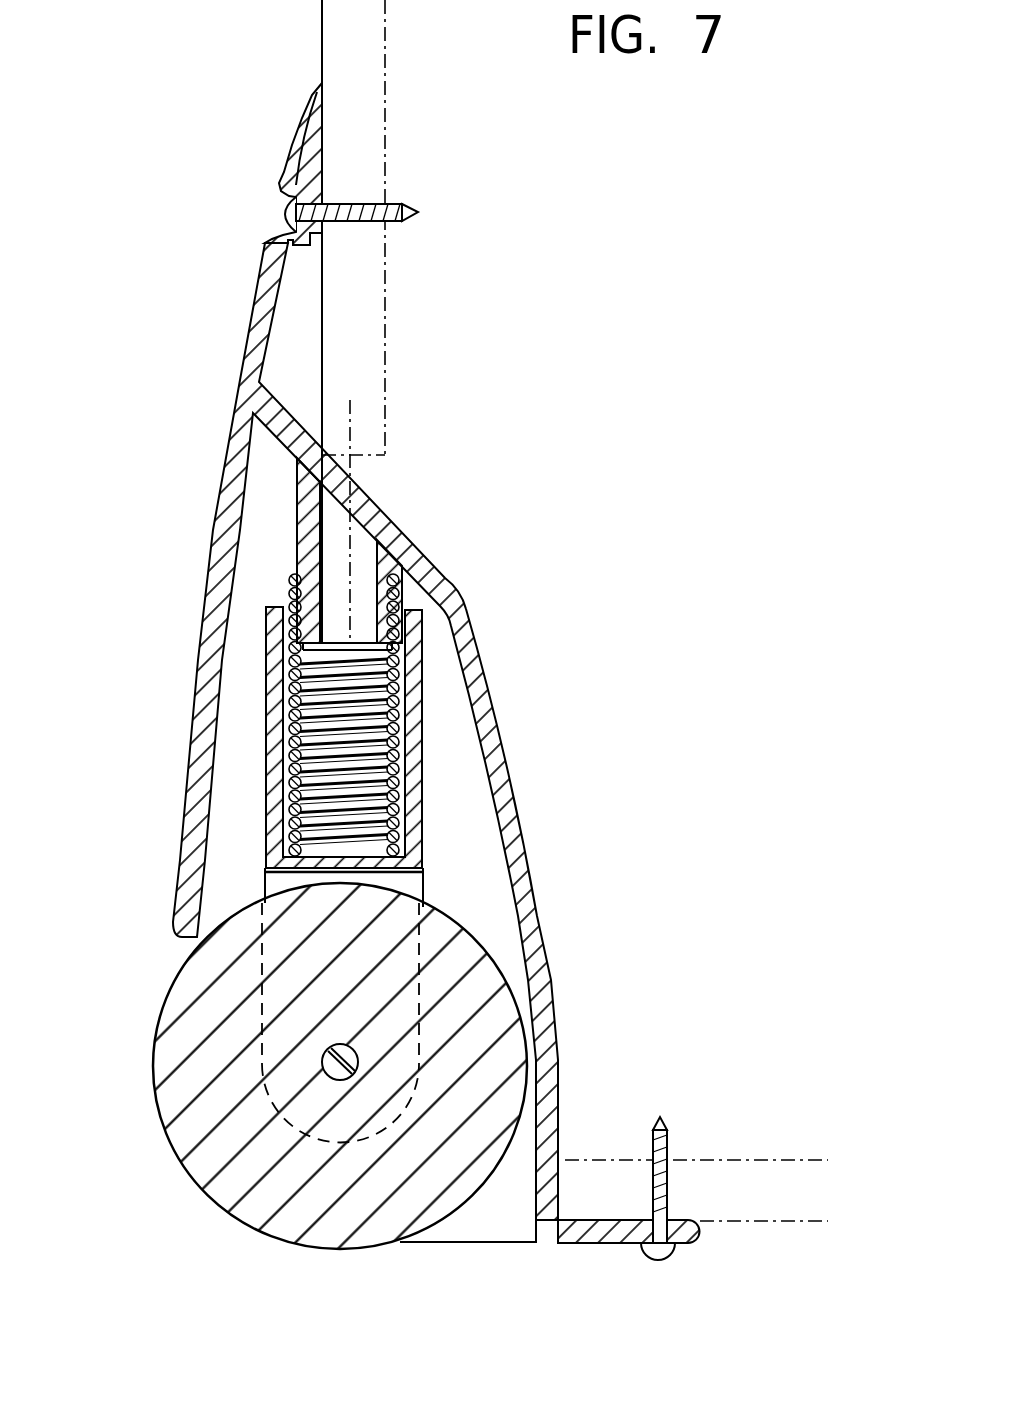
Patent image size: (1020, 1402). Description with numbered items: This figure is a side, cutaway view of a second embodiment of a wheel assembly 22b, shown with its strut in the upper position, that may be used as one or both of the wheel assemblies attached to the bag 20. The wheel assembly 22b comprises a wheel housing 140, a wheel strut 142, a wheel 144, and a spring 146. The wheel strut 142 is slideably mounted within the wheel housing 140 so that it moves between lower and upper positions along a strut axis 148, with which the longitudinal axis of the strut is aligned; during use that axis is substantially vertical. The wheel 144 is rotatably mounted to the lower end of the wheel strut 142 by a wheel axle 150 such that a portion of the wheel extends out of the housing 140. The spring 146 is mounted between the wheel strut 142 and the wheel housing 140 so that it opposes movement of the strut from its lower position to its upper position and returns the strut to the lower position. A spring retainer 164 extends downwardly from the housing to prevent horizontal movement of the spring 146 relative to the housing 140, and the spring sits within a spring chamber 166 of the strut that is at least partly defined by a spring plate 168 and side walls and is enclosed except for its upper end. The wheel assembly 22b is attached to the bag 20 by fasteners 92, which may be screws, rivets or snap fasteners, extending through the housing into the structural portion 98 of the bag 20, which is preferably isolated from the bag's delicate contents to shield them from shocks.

The bag 20 is at (322, 57).
The wheel assembly 22b is at (222, 278).
The fasteners 92 is at (388, 211).
The structural portion 98 is at (372, 78).
The wheel housing 140 is at (197, 633).
The wheel strut 142 is at (436, 723).
The wheel 144 is at (178, 1014).
The spring 146 is at (400, 753).
The strut axis 148 is at (350, 553).
The wheel axle 150 is at (322, 1068).
The spring retainer 164 is at (445, 575).
The spring chamber 166 is at (400, 788).
The spring plate 168 is at (424, 874).